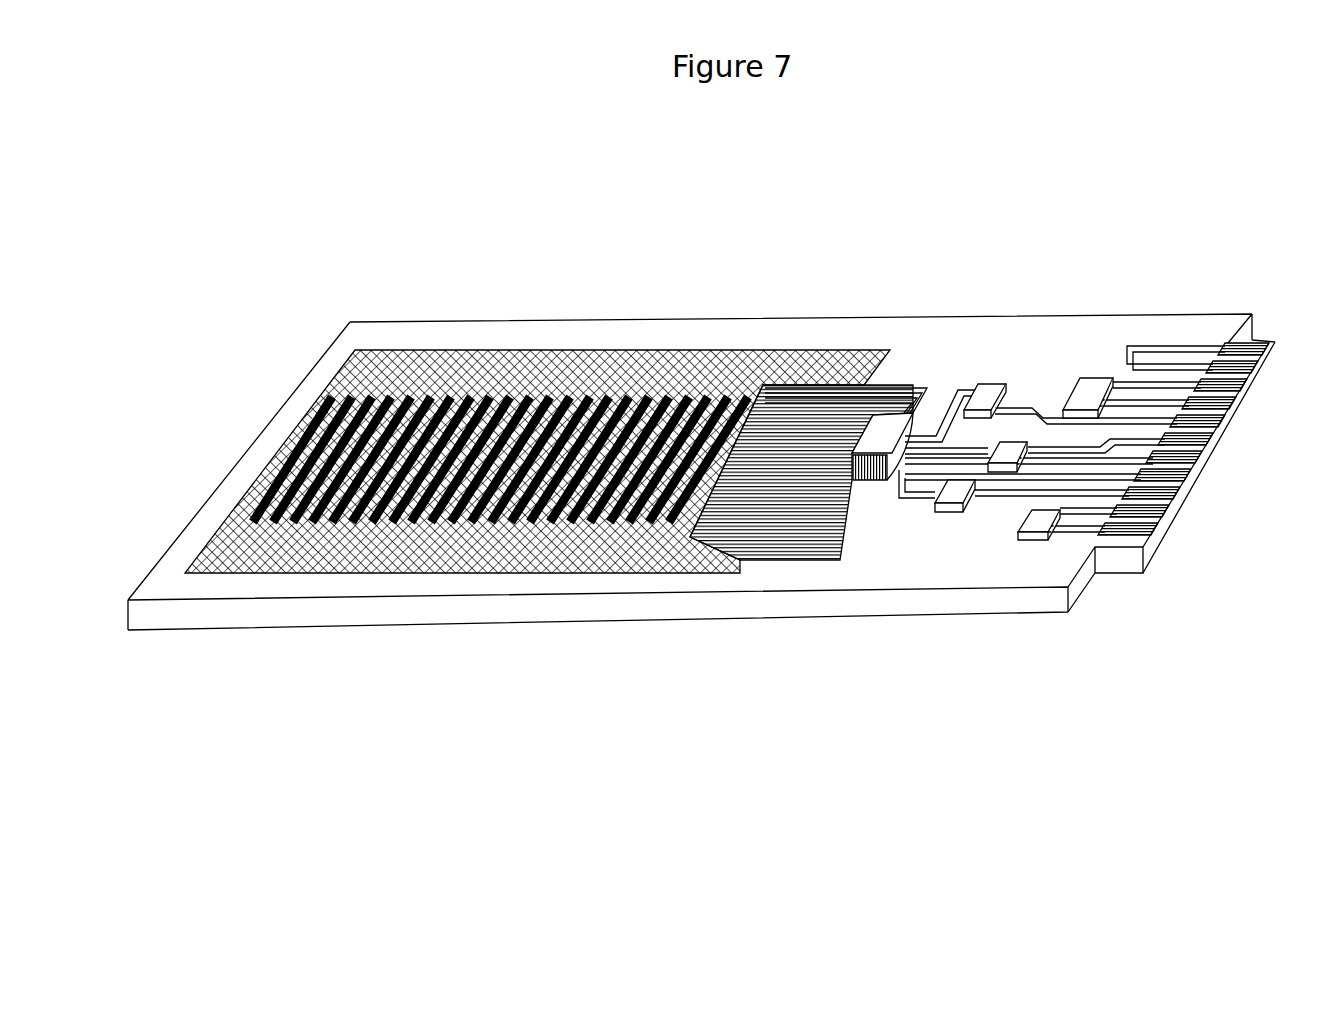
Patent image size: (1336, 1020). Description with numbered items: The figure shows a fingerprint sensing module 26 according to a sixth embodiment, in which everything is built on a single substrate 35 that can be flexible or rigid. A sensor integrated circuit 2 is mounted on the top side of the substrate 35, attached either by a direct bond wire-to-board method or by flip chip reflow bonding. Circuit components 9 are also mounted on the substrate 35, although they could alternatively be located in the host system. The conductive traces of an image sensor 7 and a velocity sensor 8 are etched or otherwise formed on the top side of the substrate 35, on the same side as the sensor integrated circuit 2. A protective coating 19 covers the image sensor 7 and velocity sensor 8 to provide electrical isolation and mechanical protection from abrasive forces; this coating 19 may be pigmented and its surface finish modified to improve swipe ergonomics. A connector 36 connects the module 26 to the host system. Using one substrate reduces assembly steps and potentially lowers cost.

The fingerprint sensing module 26 is at (232, 402).
The substrate 35 is at (350, 322).
The connector 36 is at (1128, 535).
The protective coating 19 is at (563, 350).
The velocity sensor 8 is at (355, 571).
The image sensor 7 is at (793, 350).
The sensor integrated circuit 2 is at (885, 482).
The circuit components 9 is at (982, 383).